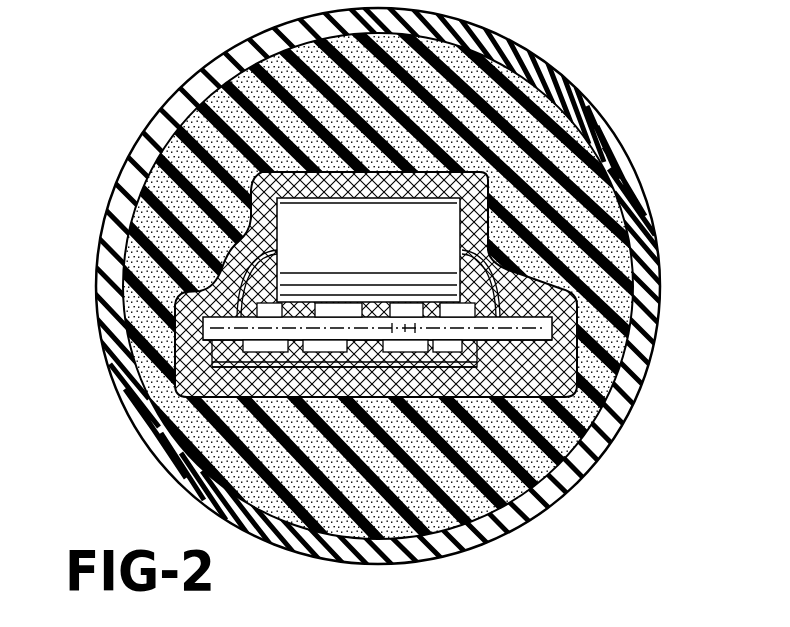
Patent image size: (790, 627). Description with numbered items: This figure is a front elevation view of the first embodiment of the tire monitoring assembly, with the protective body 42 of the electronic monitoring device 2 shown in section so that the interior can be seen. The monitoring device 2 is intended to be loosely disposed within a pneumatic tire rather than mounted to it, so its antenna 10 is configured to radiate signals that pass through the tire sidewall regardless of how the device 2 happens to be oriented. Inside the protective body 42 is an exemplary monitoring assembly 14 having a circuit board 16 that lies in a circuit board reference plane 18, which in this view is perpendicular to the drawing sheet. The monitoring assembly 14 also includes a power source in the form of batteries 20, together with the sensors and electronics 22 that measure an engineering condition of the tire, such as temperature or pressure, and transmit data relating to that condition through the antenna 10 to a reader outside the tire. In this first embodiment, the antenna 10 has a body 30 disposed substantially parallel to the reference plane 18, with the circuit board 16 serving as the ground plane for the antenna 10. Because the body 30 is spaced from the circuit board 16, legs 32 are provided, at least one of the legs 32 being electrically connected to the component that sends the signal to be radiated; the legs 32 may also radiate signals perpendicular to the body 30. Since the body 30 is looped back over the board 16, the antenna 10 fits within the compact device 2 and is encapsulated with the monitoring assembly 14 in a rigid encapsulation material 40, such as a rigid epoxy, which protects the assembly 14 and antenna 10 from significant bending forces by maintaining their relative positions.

The electronic monitoring device 2 is at (562, 47).
The antenna 10 is at (300, 368).
The monitoring assembly 14 is at (549, 335).
The circuit board 16 is at (533, 317).
The circuit board reference plane 18 is at (580, 402).
The batteries 20 is at (415, 222).
The sensors and electronics 22 is at (337, 352).
The body 30 is at (312, 398).
The legs 32 is at (210, 357).
The rigid encapsulation material 40 is at (492, 250).
The protective body 42 is at (204, 133).